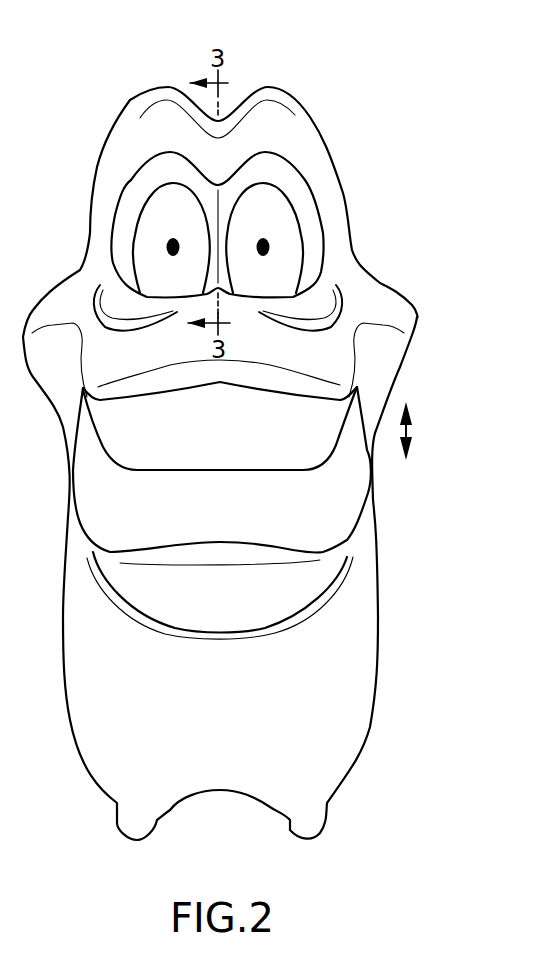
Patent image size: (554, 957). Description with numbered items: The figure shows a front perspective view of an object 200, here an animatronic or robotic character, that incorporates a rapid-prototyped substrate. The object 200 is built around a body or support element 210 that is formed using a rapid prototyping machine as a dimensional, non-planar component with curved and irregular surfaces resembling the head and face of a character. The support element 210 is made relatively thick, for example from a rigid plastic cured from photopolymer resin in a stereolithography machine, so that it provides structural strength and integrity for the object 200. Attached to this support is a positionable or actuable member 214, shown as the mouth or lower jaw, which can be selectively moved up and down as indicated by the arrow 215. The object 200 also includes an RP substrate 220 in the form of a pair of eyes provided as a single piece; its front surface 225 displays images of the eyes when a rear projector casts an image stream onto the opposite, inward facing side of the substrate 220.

The object 200 is at (436, 66).
The support element 210 is at (311, 117).
The actuable member 214 is at (392, 501).
The arrow 215 is at (408, 430).
The RP substrate 220 is at (318, 178).
The front surface 225 is at (308, 227).